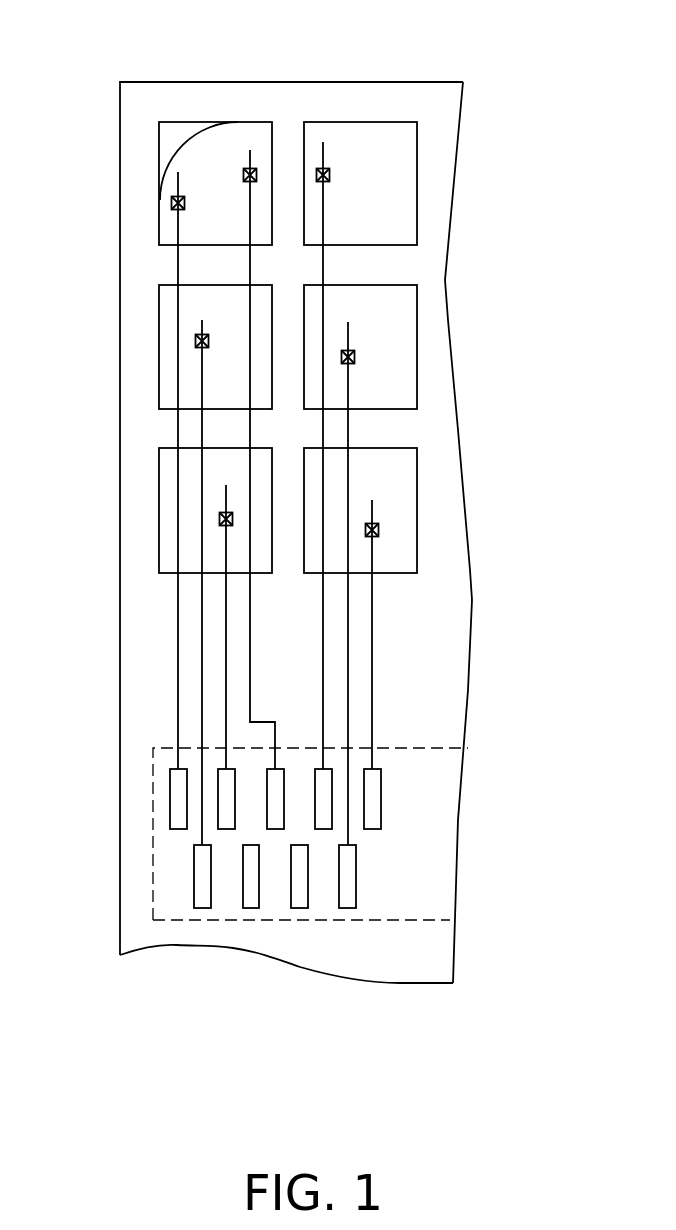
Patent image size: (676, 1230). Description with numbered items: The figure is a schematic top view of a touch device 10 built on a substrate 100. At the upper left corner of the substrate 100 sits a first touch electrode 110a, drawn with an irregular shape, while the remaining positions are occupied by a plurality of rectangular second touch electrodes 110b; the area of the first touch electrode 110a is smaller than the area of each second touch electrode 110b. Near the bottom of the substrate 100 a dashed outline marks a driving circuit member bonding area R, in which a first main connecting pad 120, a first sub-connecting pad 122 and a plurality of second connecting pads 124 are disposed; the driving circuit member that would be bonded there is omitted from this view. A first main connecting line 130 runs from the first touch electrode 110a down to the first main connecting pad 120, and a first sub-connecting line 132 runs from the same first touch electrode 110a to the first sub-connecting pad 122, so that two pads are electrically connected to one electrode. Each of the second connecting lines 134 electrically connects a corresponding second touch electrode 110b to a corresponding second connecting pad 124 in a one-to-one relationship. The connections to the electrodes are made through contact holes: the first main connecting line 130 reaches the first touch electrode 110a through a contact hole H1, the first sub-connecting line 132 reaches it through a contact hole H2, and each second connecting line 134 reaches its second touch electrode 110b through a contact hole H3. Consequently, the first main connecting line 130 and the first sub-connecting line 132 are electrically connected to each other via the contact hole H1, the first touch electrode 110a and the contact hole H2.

The touch device 10 is at (555, 1023).
The substrate 100 is at (445, 109).
The first touch electrode 110a is at (195, 160).
The second touch electrodes 110b is at (405, 197).
The first main connecting pad 120 is at (170, 790).
The first sub-connecting pad 122 is at (275, 829).
The second connecting pads 124 is at (226, 829).
The first main connecting line 130 is at (177, 232).
The first sub-connecting line 132 is at (248, 157).
The second connecting lines 134 is at (327, 234).
The contact hole H1 is at (172, 203).
The contact hole H2 is at (255, 172).
The contact hole H3 is at (330, 175).
The driving circuit member bonding area R is at (422, 747).